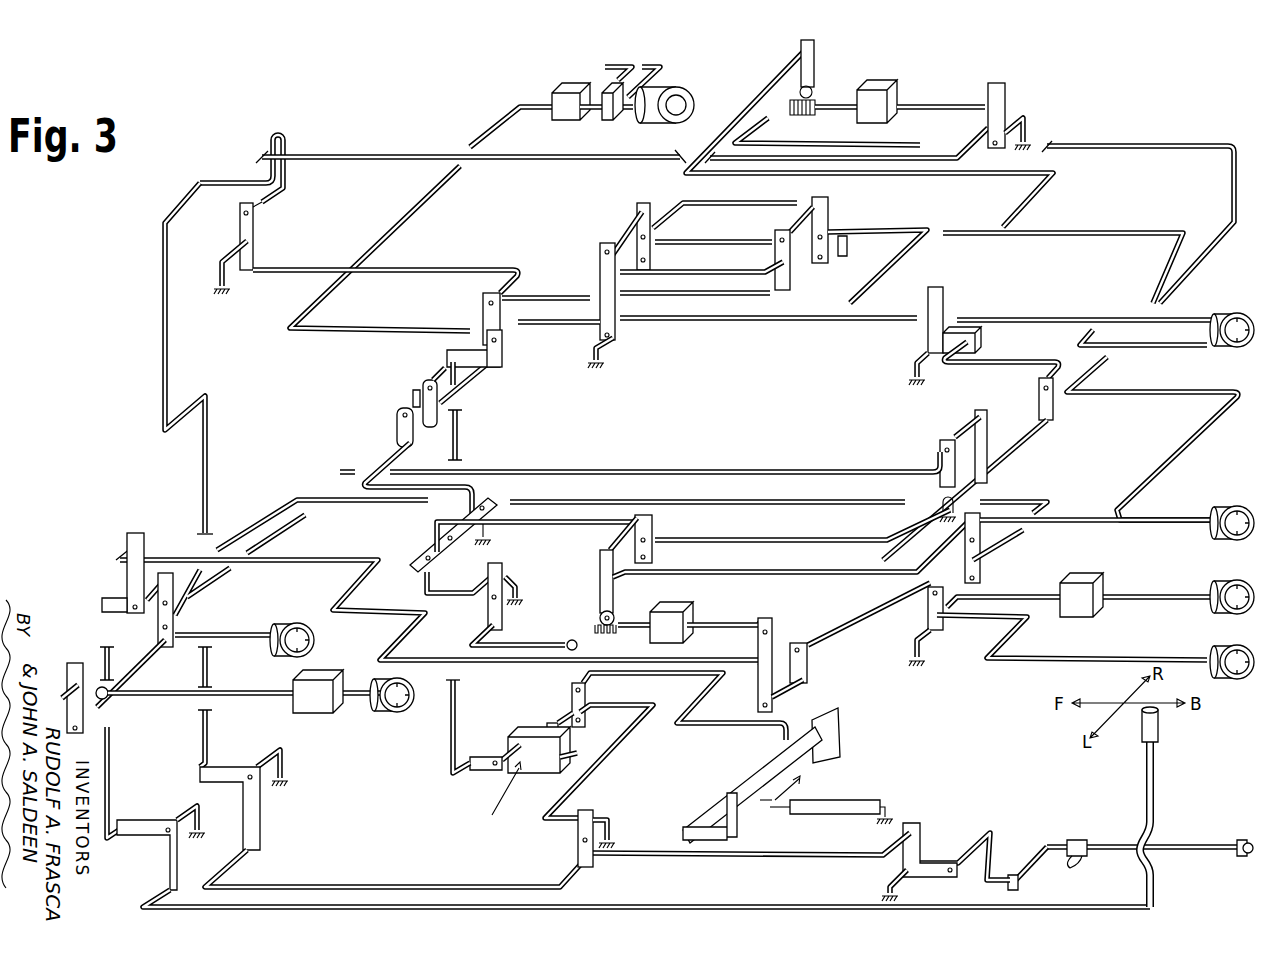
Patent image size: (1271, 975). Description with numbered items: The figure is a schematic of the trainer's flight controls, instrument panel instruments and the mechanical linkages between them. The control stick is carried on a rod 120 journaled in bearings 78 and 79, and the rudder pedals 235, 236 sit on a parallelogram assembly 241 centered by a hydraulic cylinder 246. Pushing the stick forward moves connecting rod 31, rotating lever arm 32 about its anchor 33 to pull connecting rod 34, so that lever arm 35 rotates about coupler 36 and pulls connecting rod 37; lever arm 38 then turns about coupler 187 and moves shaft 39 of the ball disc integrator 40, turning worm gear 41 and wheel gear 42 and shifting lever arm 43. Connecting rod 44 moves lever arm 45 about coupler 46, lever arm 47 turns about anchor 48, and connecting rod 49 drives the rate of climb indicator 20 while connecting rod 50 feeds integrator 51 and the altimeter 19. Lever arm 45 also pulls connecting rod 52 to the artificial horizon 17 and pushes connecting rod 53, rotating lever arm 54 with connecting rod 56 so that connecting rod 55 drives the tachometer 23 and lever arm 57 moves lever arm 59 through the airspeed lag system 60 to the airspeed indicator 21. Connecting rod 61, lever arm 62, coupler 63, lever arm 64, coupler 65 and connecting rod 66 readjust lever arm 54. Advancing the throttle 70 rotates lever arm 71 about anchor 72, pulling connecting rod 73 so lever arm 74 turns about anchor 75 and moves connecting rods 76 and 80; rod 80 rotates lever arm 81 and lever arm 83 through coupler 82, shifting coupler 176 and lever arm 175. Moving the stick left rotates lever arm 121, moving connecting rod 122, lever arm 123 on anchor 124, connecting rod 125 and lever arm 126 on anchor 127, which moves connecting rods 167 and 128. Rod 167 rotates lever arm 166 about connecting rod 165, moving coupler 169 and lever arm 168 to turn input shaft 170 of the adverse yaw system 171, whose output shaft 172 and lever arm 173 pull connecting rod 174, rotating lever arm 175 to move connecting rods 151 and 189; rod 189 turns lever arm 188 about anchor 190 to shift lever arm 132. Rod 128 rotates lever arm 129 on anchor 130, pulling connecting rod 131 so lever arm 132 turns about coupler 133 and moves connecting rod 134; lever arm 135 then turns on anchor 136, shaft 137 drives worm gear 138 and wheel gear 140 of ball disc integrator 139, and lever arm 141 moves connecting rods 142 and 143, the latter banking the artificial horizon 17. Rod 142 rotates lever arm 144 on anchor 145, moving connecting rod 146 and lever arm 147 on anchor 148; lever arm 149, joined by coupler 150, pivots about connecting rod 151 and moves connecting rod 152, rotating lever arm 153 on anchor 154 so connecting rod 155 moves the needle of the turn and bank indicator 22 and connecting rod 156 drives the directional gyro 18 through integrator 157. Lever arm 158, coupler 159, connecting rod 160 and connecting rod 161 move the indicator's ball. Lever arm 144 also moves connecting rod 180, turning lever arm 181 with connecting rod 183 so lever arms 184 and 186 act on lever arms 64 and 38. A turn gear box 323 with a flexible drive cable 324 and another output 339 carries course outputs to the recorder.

The artificial horizon 17 is at (1243, 542).
The directional gyro 18 is at (660, 85).
The altimeter 19 is at (1243, 613).
The rate of climb indicator 20 is at (1245, 682).
The airspeed indicator 21 is at (400, 713).
The turn and bank indicator 22 is at (1245, 350).
The tachometer 23 is at (295, 623).
The connecting rod 31 is at (712, 905).
The lever arm 32 is at (150, 820).
The anchor 33 is at (205, 812).
The connecting rod 34 is at (110, 770).
The lever arm 35 is at (122, 580).
The coupler 36 is at (155, 630).
The connecting rod 37 is at (295, 558).
The lever arm 38 is at (757, 688).
The shaft 39 is at (712, 620).
The ball disc integrator 40 is at (672, 605).
The worm gear 41 is at (603, 634).
The wheel gear 42 is at (615, 622).
The lever arm 43 is at (598, 578).
The connecting rod 44 is at (755, 570).
The lever arm 45 is at (1000, 552).
The coupler 46 is at (935, 578).
The lever arm 47 is at (926, 605).
The anchor 48 is at (912, 645).
The connecting rod 49 is at (1010, 665).
The connecting rod 50 is at (998, 596).
The integrator 51 is at (1080, 582).
The connecting rod 52 is at (1168, 522).
The connecting rod 53 is at (1010, 500).
The lever arm 54 is at (167, 572).
The connecting rod 55 is at (228, 628).
The connecting rod 56 is at (148, 660).
The lever arm 57 is at (80, 662).
The lever arm 59 is at (155, 698).
The airspeed lag system 60 is at (318, 712).
The connecting rod 61 is at (780, 535).
The lever arm 62 is at (652, 557).
The coupler 63 is at (618, 530).
The lever arm 64 is at (938, 458).
The coupler 65 is at (960, 430).
The connecting rod 66 is at (783, 470).
The throttle 70 is at (540, 632).
The lever arm 71 is at (503, 605).
The anchor 72 is at (520, 583).
The connecting rod 73 is at (440, 598).
The lever arm 74 is at (418, 548).
The anchor 75 is at (490, 533).
The connecting rod 76 is at (548, 530).
The bearing 78 is at (1080, 840).
The bearing 79 is at (1232, 843).
The connecting rod 80 is at (478, 492).
The lever arm 81 is at (395, 430).
The coupler 82 is at (399, 396).
The lever arm 83 is at (420, 375).
The rod 120 is at (1168, 843).
The lever arm 121 is at (1032, 858).
The connecting rod 122 is at (975, 840).
The lever arm 123 is at (920, 842).
The anchor 124 is at (895, 880).
The connecting rod 125 is at (810, 825).
The lever arm 126 is at (598, 805).
The anchor 127 is at (612, 815).
The connecting rod 128 is at (363, 885).
The lever arm 129 is at (262, 812).
The anchor 130 is at (270, 755).
The connecting rod 131 is at (210, 735).
The lever arm 132 is at (220, 180).
The coupler 133 is at (270, 195).
The connecting rod 134 is at (350, 155).
The lever arm 135 is at (1008, 105).
The anchor 136 is at (1028, 118).
The shaft 137 is at (935, 106).
The worm gear 138 is at (812, 115).
The ball disc integrator 139 is at (875, 88).
The wheel gear 140 is at (815, 85).
The lever arm 141 is at (815, 52).
The connecting rod 142 is at (740, 105).
The connecting rod 143 is at (760, 120).
The lever arm 144 is at (945, 292).
The anchor 145 is at (915, 350).
The connecting rod 146 is at (900, 258).
The lever arm 147 is at (850, 180).
The anchor 148 is at (848, 248).
The lever arm 149 is at (790, 280).
The coupler 150 is at (800, 220).
The connecting rod 151 is at (680, 300).
The connecting rod 152 is at (730, 270).
The lever arm 153 is at (598, 258).
The anchor 154 is at (605, 352).
The connecting rod 155 is at (730, 322).
The connecting rod 156 is at (535, 328).
The integrator 157 is at (565, 92).
The lever arm 158 is at (643, 202).
The coupler 159 is at (618, 240).
The connecting rod 160 is at (755, 195).
The connecting rod 161 is at (735, 232).
The connecting rod 165 is at (705, 735).
The lever arm 166 is at (575, 690).
The connecting rod 167 is at (622, 747).
The lever arm 168 is at (545, 768).
The coupler 169 is at (562, 718).
The input shaft 170 is at (565, 752).
The adverse yaw system 171 is at (495, 799).
The output shaft 172 is at (502, 752).
The lever arm 173 is at (478, 772).
The connecting rod 174 is at (450, 735).
The lever arm 175 is at (505, 370).
The coupler 176 is at (470, 390).
The connecting rod 180 is at (995, 362).
The lever arm 181 is at (1038, 395).
The connecting rod 183 is at (1015, 445).
The lever arm 184 is at (988, 430).
The lever arm 186 is at (812, 655).
The coupler 187 is at (805, 685).
The lever arm 188 is at (255, 228).
The connecting rod 189 is at (420, 262).
The anchor 190 is at (228, 256).
The rudder pedal 235 is at (745, 822).
The rudder pedal 236 is at (840, 740).
The parallelogram assembly 241 is at (805, 773).
The hydraulic cylinder 246 is at (870, 800).
The turn gear box 323 is at (607, 115).
The flexible drive cable 324 is at (650, 67).
The output 339 is at (606, 57).